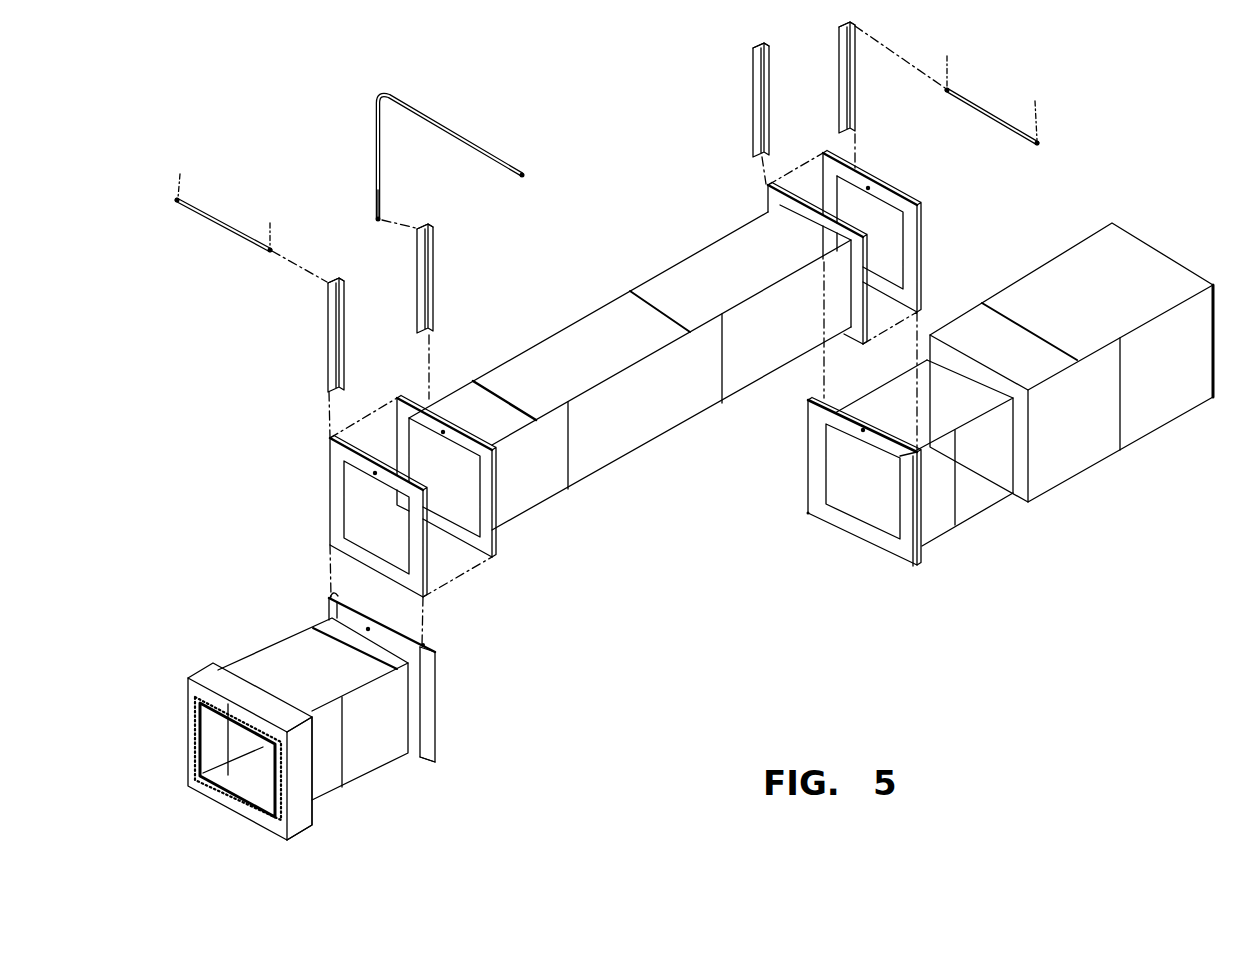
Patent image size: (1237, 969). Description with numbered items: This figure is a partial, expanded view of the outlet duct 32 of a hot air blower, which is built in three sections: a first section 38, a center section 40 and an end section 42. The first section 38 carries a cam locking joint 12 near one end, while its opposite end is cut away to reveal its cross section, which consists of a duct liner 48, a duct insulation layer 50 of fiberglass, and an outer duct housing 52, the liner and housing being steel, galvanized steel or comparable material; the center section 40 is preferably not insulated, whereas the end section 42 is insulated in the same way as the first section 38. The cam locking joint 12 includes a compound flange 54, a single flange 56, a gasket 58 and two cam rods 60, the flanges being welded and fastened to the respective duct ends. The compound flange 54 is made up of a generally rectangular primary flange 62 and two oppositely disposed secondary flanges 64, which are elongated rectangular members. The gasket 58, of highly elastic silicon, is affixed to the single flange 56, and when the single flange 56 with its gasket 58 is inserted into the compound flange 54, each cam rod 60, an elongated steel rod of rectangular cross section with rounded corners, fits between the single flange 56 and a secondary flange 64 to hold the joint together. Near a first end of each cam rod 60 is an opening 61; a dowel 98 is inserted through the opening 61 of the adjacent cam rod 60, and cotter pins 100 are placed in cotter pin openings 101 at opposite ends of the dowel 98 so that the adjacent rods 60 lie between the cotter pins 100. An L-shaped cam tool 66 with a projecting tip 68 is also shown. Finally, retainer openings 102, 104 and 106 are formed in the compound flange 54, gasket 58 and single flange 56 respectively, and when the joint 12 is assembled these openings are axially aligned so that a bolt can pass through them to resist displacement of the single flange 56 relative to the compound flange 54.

The cam locking joint 12 is at (298, 405).
The outlet duct 32 is at (640, 136).
The first section 38 is at (378, 770).
The center section 40 is at (662, 282).
The end section 42 is at (1132, 258).
The duct liner 48 is at (208, 793).
The duct insulation layer 50 is at (243, 808).
The duct housing 52 is at (290, 808).
The compound flange 54 is at (441, 740).
The single flange 56 is at (497, 542).
The gasket 58 is at (328, 468).
The cam rod 60 is at (322, 351).
The opening 61 is at (342, 284).
The primary flange 62 is at (366, 630).
The secondary flange 64 is at (335, 590).
The cam tool 66 is at (478, 150).
The projecting tip 68 is at (384, 219).
The dowel 98 is at (222, 222).
The cotter pin 100 is at (191, 160).
The cotter pin opening 101 is at (180, 205).
The retainer opening 102 is at (370, 628).
The retainer opening 104 is at (373, 474).
The retainer opening 106 is at (444, 430).